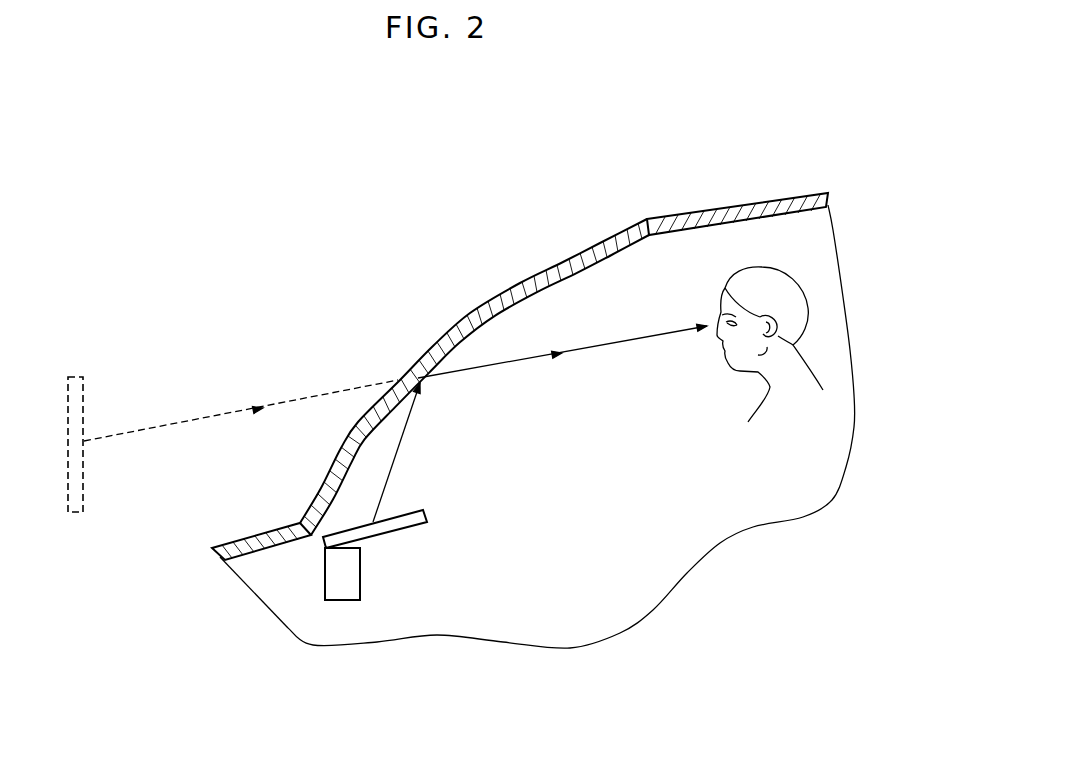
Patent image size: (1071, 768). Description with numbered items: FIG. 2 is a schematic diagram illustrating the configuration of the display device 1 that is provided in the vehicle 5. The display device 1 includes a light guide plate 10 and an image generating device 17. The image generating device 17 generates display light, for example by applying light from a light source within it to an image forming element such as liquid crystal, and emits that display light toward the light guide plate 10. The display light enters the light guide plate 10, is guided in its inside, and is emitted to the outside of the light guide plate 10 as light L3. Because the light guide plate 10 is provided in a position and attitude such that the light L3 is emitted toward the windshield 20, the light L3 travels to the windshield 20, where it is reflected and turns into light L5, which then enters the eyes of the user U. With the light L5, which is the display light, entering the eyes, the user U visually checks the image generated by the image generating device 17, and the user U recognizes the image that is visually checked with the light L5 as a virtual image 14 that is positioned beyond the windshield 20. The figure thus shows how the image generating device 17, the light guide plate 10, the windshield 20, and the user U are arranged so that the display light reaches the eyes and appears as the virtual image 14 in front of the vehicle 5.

The vehicle 5 is at (727, 163).
The windshield 20 is at (578, 250).
The user U is at (787, 262).
The virtual image 14 is at (80, 377).
The light L3 is at (403, 433).
The light L5 is at (632, 338).
The display device 1 is at (406, 561).
The light guide plate 10 is at (410, 523).
The image generating device 17 is at (355, 583).